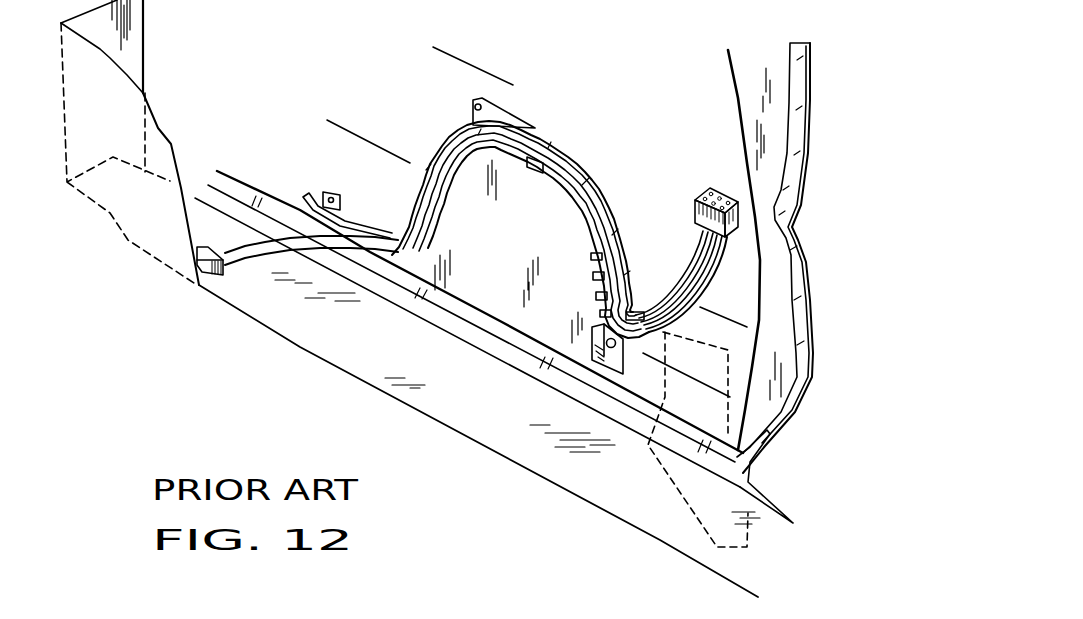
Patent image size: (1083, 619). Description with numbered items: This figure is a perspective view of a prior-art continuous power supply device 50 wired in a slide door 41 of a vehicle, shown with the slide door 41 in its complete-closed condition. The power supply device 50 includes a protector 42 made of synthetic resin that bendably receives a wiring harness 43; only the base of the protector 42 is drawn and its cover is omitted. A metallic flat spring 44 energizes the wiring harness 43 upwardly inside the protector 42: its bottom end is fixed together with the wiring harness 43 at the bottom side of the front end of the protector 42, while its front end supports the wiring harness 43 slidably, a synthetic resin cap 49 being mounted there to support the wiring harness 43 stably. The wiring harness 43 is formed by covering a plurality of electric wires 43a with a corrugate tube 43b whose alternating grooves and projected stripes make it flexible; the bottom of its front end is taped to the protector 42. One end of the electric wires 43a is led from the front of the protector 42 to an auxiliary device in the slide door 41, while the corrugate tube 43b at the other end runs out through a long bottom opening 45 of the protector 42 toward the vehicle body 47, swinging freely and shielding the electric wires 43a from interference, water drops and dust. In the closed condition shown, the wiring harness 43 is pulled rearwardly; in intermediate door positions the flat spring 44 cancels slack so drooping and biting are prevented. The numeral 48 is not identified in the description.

The slide door 41 is at (813, 357).
The protector 42 is at (567, 150).
The wiring harness 43 is at (455, 174).
The electric wires 43a is at (680, 277).
The corrugate tube 43b is at (745, 190).
The flat spring 44 is at (583, 215).
The bottom opening 45 is at (490, 312).
The vehicle body 47 is at (150, 48).
The floor panel 48 is at (330, 330).
The cap 49 is at (527, 158).
The power supply device 50 is at (548, 117).